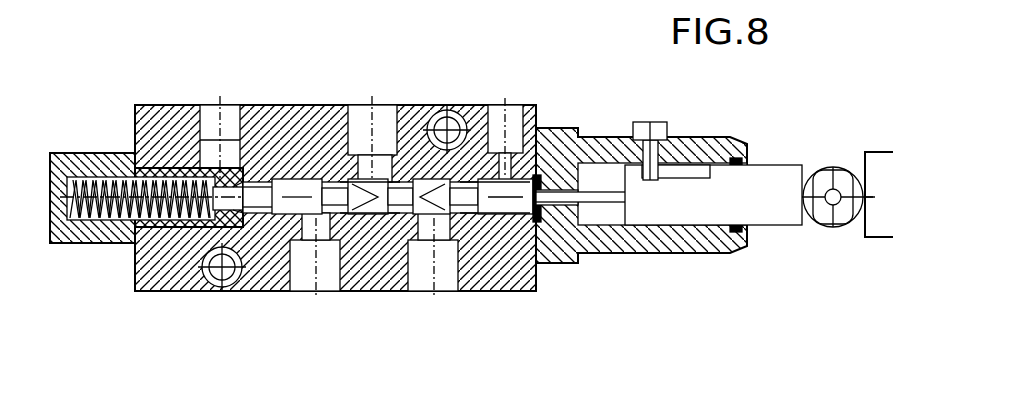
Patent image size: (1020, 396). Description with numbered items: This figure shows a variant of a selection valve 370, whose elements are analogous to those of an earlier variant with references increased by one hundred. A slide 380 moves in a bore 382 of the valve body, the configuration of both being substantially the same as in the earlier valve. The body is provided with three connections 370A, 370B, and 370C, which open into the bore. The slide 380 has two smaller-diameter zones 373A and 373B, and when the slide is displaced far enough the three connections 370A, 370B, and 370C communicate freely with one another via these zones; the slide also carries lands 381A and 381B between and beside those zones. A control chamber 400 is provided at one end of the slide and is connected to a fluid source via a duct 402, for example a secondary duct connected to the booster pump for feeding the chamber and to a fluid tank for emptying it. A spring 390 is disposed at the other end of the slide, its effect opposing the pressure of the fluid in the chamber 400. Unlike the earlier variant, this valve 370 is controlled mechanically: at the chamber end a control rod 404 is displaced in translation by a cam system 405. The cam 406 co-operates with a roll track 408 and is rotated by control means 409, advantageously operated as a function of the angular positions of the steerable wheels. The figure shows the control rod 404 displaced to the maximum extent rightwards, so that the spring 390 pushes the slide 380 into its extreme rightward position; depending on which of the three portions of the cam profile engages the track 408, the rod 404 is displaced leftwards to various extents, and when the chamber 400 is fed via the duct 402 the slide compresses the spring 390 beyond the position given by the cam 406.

The selection valve 370 is at (197, 80).
The first connection 370A is at (302, 291).
The second connection 370B is at (420, 291).
The third connection 370C is at (393, 122).
The smaller-diameter zone 373A is at (367, 215).
The smaller-diameter zone 373B is at (507, 214).
The slide 380 is at (487, 214).
The first spool land 381A is at (348, 182).
The second spool land 381B is at (420, 182).
The bore 382 is at (523, 214).
The spring 390 is at (107, 225).
The control chamber 400 is at (557, 128).
The duct 402 is at (513, 108).
The control rod 404 is at (590, 205).
The cam system 405 is at (781, 148).
The cam 406 is at (820, 167).
The roll track 408 is at (873, 237).
The control means 409 is at (843, 205).